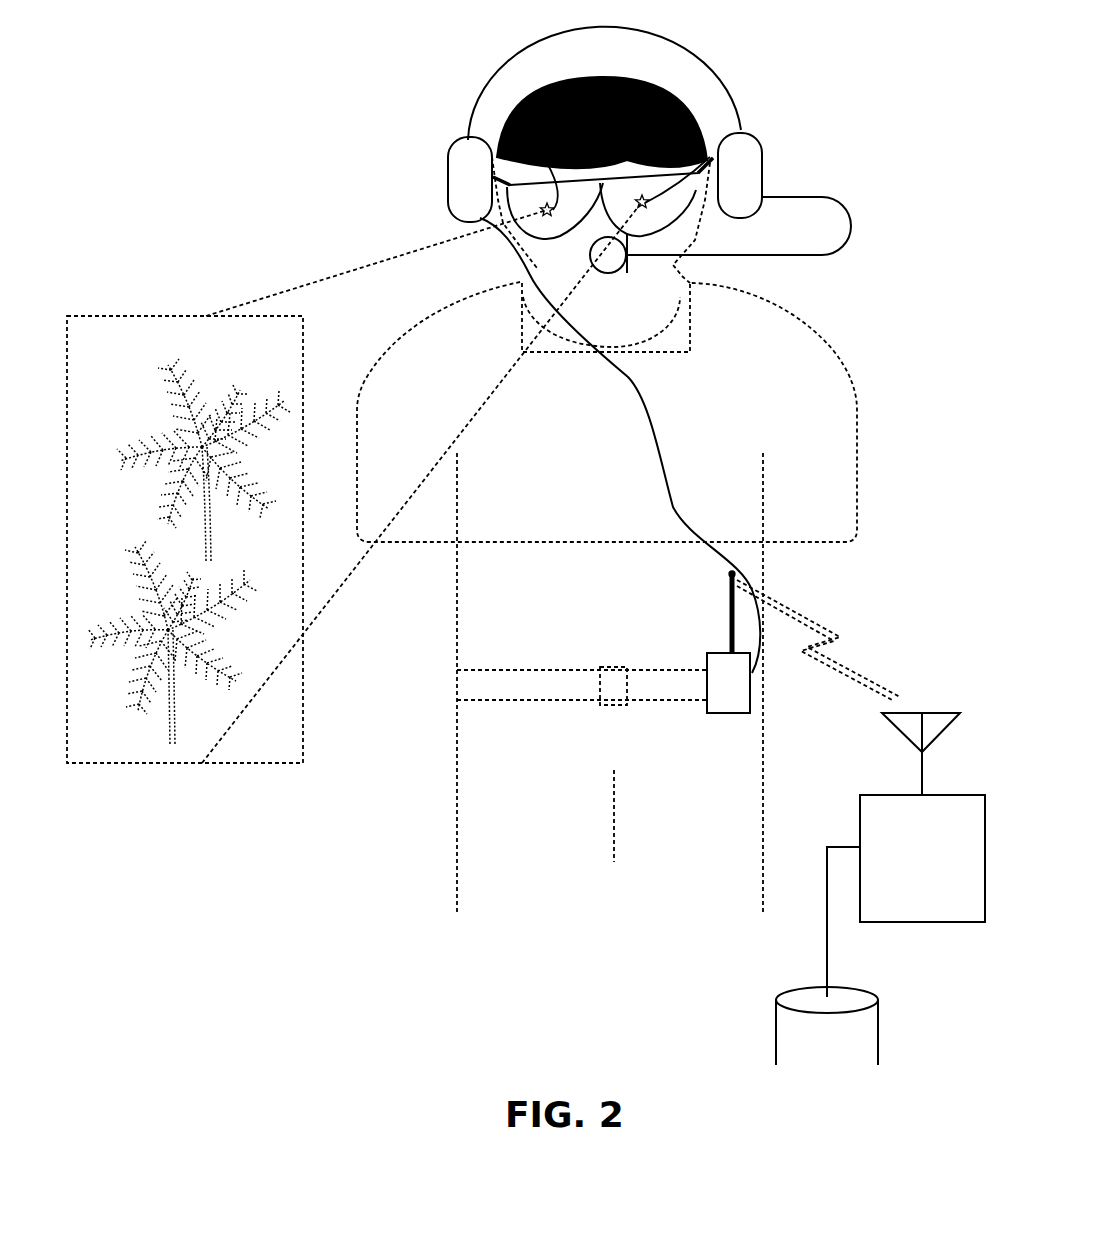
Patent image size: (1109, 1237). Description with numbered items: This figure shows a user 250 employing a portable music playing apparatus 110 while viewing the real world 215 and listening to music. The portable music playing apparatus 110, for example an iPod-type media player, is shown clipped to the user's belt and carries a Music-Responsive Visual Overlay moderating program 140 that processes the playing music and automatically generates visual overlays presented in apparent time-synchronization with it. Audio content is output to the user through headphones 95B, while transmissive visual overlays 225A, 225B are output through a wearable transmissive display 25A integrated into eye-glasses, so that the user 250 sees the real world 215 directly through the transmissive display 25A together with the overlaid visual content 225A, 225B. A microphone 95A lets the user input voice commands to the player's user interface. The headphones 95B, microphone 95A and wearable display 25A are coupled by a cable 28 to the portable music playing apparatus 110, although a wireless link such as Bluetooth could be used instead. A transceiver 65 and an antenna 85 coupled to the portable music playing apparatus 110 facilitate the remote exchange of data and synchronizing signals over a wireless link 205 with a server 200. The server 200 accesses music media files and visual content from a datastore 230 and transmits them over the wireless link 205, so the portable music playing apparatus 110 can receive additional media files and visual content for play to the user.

The transmissive visual overlay 225A is at (512, 112).
The transmissive visual overlay 225B is at (700, 155).
The headphones 95B is at (748, 167).
The transmissive display 25A is at (677, 222).
The microphone 95A is at (608, 255).
The cable 28 is at (628, 377).
The user 250 is at (626, 525).
The transceiver 65 is at (730, 627).
The wireless link 205 is at (840, 637).
The real world 215 is at (130, 757).
The portable music playing apparatus 110 is at (707, 713).
The Music-Responsive Visual Overlay moderating program 140 is at (737, 713).
The antenna 85 is at (910, 737).
The server 200 is at (976, 913).
The datastore 230 is at (776, 1040).